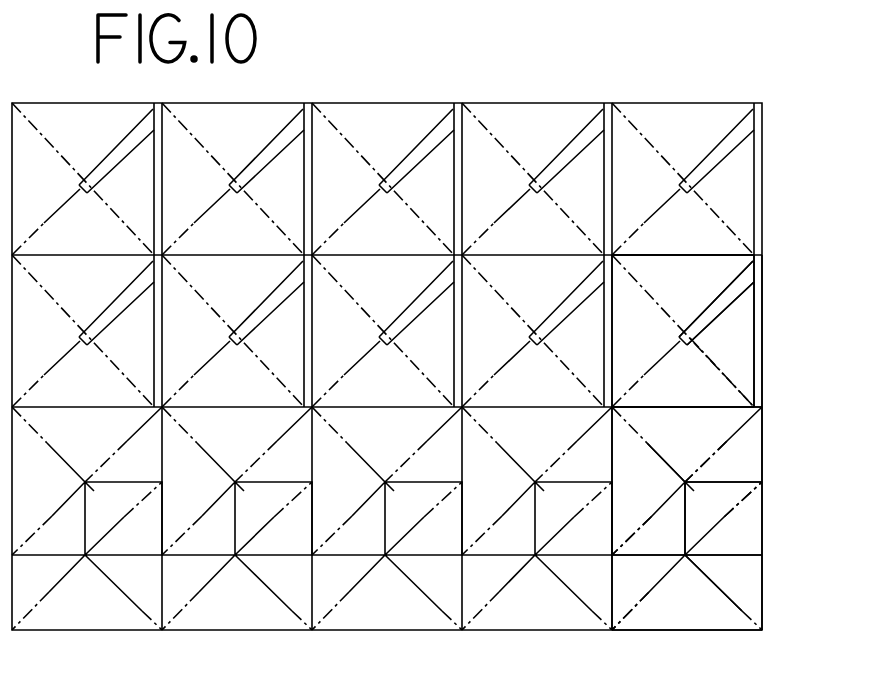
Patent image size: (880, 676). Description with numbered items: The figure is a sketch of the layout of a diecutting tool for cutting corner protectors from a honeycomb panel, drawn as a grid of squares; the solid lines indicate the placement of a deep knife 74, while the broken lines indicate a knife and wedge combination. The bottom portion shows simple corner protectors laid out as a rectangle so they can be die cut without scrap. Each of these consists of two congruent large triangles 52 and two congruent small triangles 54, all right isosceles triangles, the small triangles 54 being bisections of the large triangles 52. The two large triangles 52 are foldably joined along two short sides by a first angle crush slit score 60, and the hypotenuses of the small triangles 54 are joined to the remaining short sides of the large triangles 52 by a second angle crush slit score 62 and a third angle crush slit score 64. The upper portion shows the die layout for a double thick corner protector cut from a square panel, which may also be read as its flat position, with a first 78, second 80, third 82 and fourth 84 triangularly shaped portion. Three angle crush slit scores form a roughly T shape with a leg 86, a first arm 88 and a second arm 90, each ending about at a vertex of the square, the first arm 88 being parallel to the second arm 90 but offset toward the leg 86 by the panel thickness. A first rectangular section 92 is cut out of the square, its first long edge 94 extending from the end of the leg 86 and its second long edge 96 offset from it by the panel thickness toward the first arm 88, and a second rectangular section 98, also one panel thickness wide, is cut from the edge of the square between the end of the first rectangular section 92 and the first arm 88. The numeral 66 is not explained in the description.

The large triangle 52 is at (708, 616).
The small triangle 54 is at (645, 582).
The first angle crush slit score 60 is at (666, 458).
The second angle crush slit score 62 is at (708, 458).
The third angle crush slit score 64 is at (622, 546).
The hinge edge 66 is at (714, 495).
The deep knife 74 is at (640, 256).
The first triangularly shaped portion 78 is at (748, 350).
The second triangularly shaped portion 80 is at (684, 387).
The third triangularly shaped portion 82 is at (645, 332).
The fourth triangularly shaped portion 84 is at (694, 282).
The leg 86 is at (618, 401).
The first arm 88 is at (708, 370).
The second arm 90 is at (670, 300).
The first rectangular section 92 is at (752, 278).
The first long edge 94 is at (698, 318).
The second long edge 96 is at (737, 304).
The second rectangular section 98 is at (757, 372).